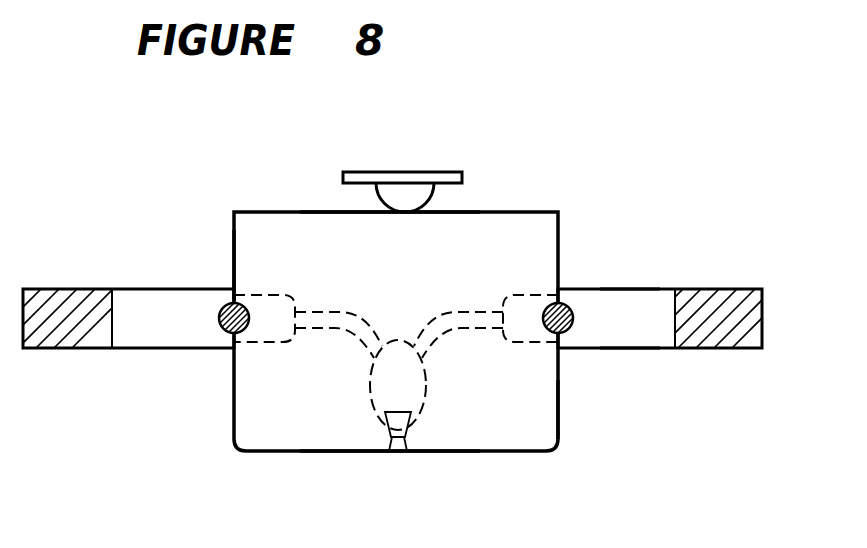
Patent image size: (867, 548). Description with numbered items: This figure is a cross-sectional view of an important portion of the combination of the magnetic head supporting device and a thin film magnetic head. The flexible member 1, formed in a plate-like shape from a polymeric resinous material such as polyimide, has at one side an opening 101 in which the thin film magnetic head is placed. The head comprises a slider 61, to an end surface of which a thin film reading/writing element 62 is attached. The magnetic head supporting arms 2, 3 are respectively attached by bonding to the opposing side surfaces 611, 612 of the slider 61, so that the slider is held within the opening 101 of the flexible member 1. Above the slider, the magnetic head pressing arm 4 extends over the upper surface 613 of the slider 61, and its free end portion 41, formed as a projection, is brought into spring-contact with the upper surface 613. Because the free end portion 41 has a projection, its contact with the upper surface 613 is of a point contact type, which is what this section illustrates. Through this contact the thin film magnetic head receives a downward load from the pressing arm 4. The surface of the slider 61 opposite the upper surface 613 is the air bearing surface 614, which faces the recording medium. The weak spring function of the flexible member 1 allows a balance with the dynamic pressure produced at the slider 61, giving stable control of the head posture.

The flexible member 1 is at (725, 312).
The opening 101 is at (617, 302).
The magnetic head supporting arm 2 is at (220, 318).
The magnetic head supporting arm 3 is at (570, 325).
The magnetic head pressing arm 4 is at (357, 172).
The free end portion 41 is at (410, 190).
The slider 61 is at (533, 242).
The side surface 611 is at (230, 248).
The side surface 612 is at (564, 434).
The upper surface 613 is at (497, 205).
The air bearing surface 614 is at (453, 460).
The thin film reading/writing element 62 is at (370, 400).